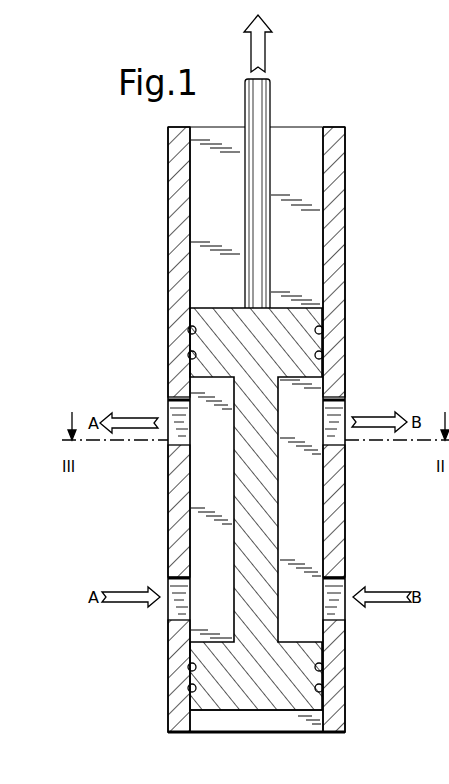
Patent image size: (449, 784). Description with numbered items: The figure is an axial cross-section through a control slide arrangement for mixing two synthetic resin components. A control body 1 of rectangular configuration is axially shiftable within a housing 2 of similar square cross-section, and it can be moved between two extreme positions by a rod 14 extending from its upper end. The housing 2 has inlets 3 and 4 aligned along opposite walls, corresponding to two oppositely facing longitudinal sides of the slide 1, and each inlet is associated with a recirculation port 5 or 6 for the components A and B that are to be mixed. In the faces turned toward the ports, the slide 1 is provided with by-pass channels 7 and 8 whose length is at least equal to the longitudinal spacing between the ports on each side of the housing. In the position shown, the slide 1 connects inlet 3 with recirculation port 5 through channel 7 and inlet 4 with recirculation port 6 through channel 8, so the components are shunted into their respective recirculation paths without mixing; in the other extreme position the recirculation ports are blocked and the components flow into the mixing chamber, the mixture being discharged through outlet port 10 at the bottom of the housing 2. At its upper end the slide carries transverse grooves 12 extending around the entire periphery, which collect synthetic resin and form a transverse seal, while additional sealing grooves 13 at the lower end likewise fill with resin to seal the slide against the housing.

The control body 1 is at (313, 340).
The housing 2 is at (335, 172).
The inlet 3 is at (180, 610).
The inlet 4 is at (337, 610).
The recirculation port 5 is at (186, 404).
The recirculation port 6 is at (338, 412).
The by-pass channel 7 is at (203, 528).
The by-pass channel 8 is at (310, 526).
The outlet port 10 is at (228, 723).
The transverse groove 12 is at (187, 330).
The sealing groove 13 is at (187, 355).
The rod 14 is at (262, 108).